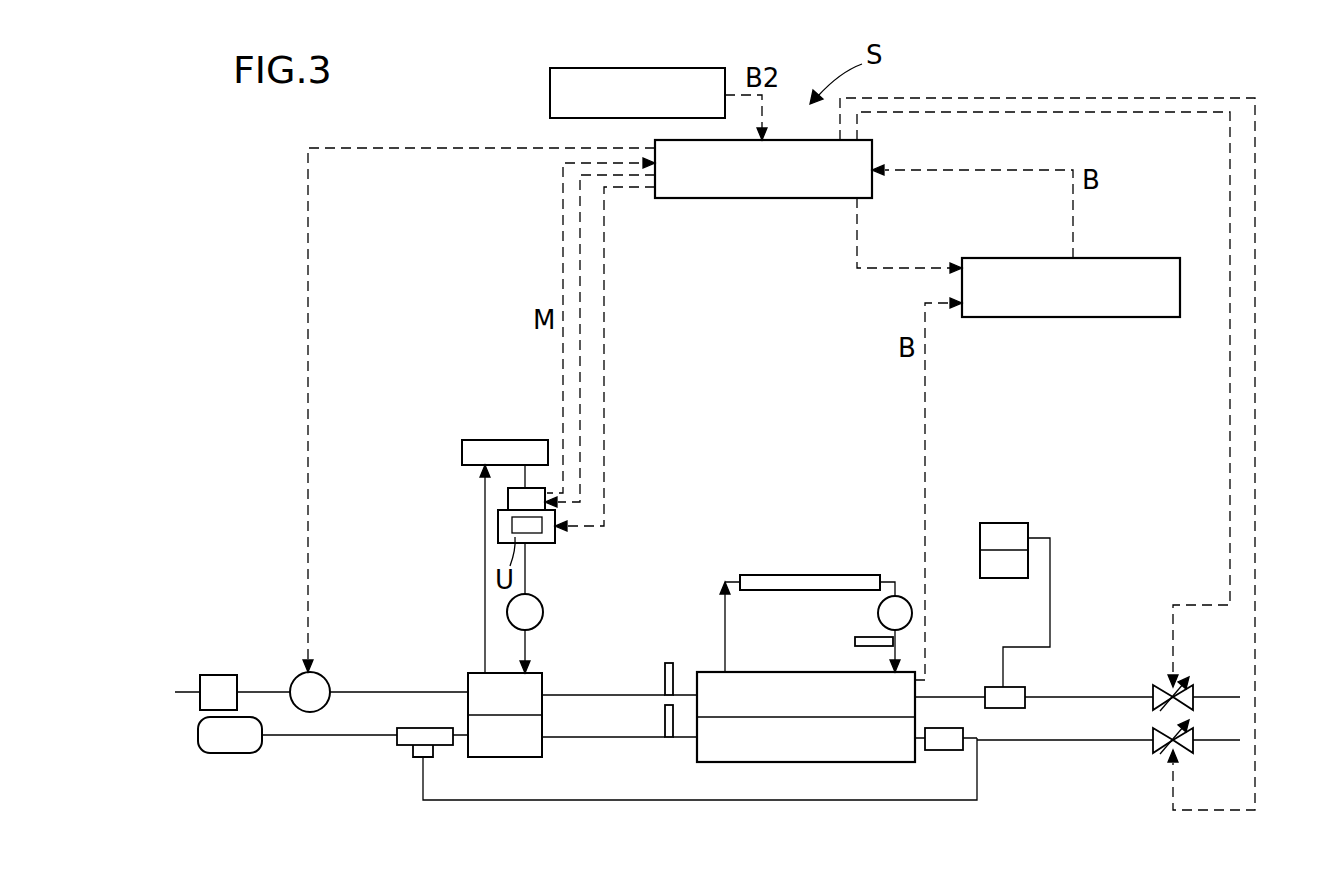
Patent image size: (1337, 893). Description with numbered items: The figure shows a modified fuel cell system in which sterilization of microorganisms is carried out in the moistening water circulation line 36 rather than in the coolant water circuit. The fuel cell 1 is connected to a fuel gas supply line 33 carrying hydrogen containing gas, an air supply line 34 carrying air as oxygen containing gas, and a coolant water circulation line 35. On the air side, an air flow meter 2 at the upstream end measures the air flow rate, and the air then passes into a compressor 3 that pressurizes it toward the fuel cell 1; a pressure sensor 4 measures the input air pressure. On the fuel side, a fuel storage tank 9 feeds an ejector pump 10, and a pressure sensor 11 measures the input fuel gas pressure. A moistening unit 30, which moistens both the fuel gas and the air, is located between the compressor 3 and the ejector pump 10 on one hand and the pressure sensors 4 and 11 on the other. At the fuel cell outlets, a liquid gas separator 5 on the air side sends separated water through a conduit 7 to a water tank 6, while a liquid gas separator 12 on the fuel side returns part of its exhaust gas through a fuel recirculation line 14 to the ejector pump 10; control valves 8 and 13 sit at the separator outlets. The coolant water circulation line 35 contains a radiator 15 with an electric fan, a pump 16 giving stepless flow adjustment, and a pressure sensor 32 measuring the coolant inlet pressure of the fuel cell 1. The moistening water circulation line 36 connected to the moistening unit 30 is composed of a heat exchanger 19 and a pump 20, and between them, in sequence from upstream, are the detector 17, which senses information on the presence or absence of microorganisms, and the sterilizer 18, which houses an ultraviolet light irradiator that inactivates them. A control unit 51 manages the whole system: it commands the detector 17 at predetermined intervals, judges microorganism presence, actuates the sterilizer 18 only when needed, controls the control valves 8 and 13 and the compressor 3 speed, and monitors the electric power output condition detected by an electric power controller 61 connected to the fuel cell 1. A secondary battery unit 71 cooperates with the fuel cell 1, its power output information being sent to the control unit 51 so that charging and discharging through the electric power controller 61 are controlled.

The fuel cell 1 is at (755, 762).
The air flow meter 2 is at (210, 675).
The compressor 3 is at (328, 677).
The pressure sensor 4 is at (665, 668).
The liquid gas separator 5 is at (1015, 708).
The water tank 6 is at (1000, 523).
The conduit 7 is at (1050, 572).
The control valve 8 is at (1185, 686).
The fuel storage tank 9 is at (228, 753).
The ejector pump 10 is at (405, 747).
The pressure sensor 11 is at (668, 740).
The liquid gas separator 12 is at (935, 750).
The control valve 13 is at (1190, 753).
The fuel recirculation line 14 is at (605, 800).
The radiator 15 is at (820, 575).
The pump 16 is at (878, 612).
The detector 17 is at (548, 490).
The sterilizer 18 is at (557, 535).
The heat exchanger 19 is at (462, 452).
The pump 20 is at (542, 604).
The moistening unit 30 is at (520, 758).
The pressure sensor 32 is at (855, 642).
The fuel gas supply line 33 is at (315, 735).
The air supply line 34 is at (400, 692).
The coolant water circulation line 35 is at (725, 625).
The moistening water circulation line 36 is at (485, 553).
The control unit 51 is at (765, 198).
The electric power controller 61 is at (1115, 258).
The secondary battery unit 71 is at (550, 95).